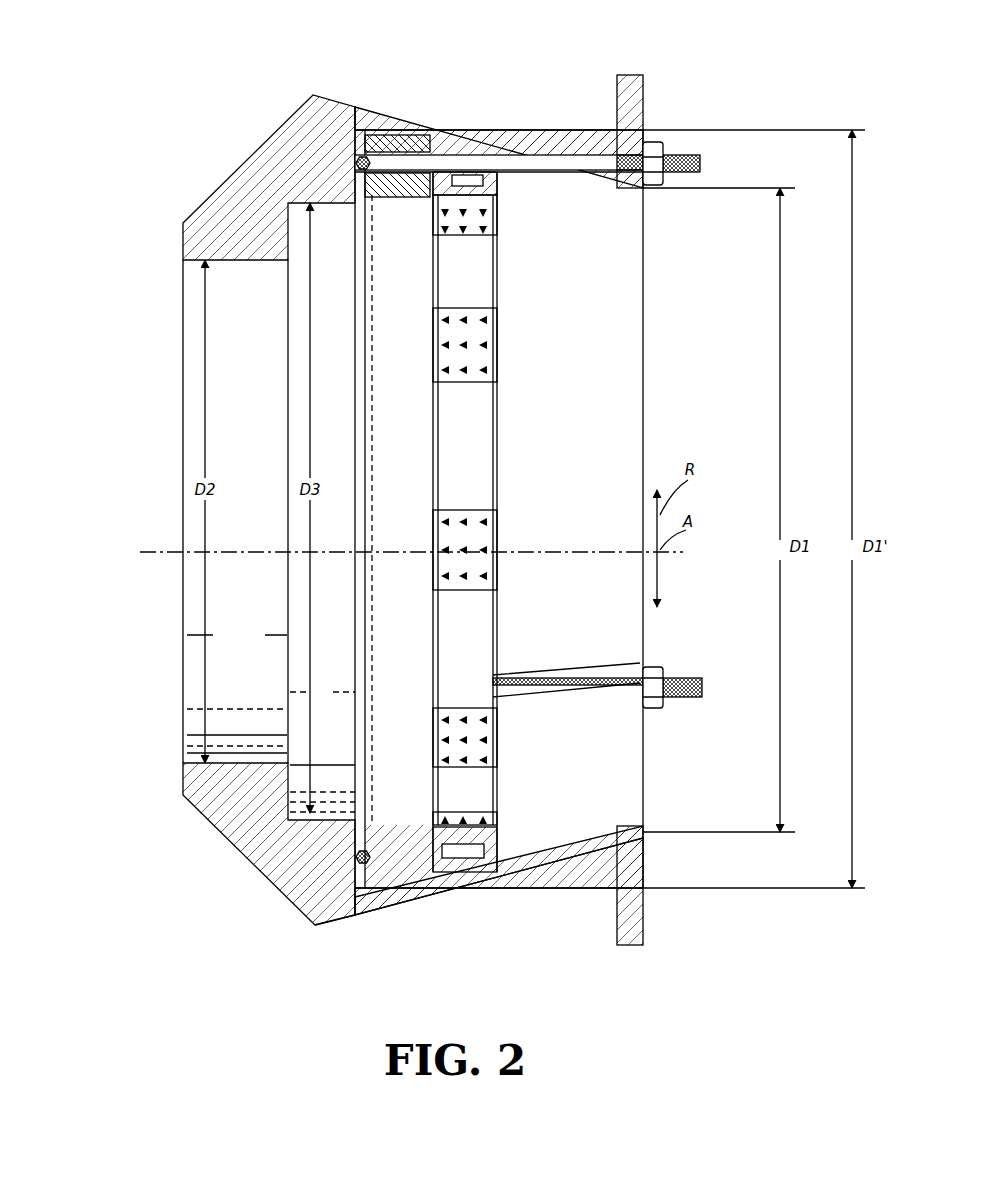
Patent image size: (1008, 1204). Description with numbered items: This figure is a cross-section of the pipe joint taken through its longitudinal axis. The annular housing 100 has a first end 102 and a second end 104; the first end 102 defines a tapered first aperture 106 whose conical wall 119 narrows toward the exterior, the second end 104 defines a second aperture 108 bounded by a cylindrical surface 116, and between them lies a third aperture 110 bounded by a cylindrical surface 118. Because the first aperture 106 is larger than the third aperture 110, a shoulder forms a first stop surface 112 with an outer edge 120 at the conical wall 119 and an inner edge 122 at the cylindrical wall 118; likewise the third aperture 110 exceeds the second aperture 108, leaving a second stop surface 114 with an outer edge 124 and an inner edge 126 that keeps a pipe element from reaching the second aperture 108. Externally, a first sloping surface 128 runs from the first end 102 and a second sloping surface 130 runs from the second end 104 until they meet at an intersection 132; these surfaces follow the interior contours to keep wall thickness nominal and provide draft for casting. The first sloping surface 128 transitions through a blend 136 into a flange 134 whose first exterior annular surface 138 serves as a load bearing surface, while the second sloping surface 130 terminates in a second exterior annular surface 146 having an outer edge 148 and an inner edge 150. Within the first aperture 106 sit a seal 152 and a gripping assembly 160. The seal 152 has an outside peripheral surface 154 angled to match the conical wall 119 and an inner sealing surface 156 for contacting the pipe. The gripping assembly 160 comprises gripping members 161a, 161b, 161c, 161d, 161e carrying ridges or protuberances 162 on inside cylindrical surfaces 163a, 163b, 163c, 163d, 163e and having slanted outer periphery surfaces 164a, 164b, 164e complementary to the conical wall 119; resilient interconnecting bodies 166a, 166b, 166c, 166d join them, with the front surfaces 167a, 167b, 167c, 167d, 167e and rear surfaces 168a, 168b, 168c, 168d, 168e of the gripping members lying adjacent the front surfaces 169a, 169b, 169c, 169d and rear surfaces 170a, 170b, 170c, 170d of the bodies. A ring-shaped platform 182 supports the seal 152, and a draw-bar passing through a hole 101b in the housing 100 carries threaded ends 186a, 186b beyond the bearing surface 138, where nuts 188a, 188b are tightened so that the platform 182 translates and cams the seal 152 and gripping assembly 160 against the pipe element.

The housing 100 is at (313, 92).
The hole 101b is at (622, 670).
The first end 102 is at (650, 208).
The second end 104 is at (172, 262).
The first aperture 106 is at (645, 292).
The second aperture 108 is at (200, 400).
The third aperture 110 is at (290, 200).
The first stop surface 112 is at (400, 150).
The second stop surface 114 is at (215, 258).
The cylindrical surface of second aperture 116 is at (183, 222).
The cylindrical surface of third aperture 118 is at (322, 198).
The conical wall 119 is at (612, 178).
The outer edge of first stop surface 120 is at (370, 135).
The inner edge of first stop surface 122 is at (333, 205).
The outer edge of second stop surface 124 is at (250, 157).
The inner edge of second stop surface 126 is at (292, 263).
The first sloping surface 128 is at (505, 135).
The second sloping surface 130 is at (200, 202).
The intersection 132 is at (315, 98).
The flange 134 is at (652, 923).
The blend 136 is at (615, 150).
The first exterior annular surface 138 is at (645, 93).
The second exterior annular surface 146 is at (180, 260).
The outer edge of second exterior annular surface 148 is at (182, 242).
The inner edge of second exterior annular surface 150 is at (182, 265).
The seal 152 is at (440, 880).
The outside peripheral surface 154 is at (412, 140).
The inner sealing surface 156 is at (412, 446).
The gripping assembly 160 is at (498, 302).
The gripping member 161a is at (497, 213).
The gripping member 161b is at (490, 357).
The gripping member 161c is at (477, 517).
The gripping member 161d is at (497, 728).
The gripping member 161e is at (510, 833).
The ridges or protuberances 162 is at (472, 258).
The inside cylindrical surface 163a is at (497, 231).
The inside cylindrical surface 163b is at (497, 337).
The inside cylindrical surface 163c is at (497, 563).
The inside cylindrical surface 163d is at (477, 705).
The inside cylindrical surface 163e is at (497, 820).
The slanted outer periphery surface 164a is at (460, 175).
The slanted outer periphery surface 164b is at (662, 667).
The slanted outer periphery surface 164e is at (485, 860).
The interconnecting body 166a is at (490, 272).
The interconnecting body 166b is at (462, 467).
The interconnecting body 166c is at (500, 627).
The interconnecting body 166d is at (495, 770).
The front surface of gripping member 167a is at (542, 172).
The front surface of gripping member 167b is at (497, 355).
The front surface of gripping member 167c is at (495, 533).
The front surface of gripping member 167d is at (497, 745).
The front surface of gripping member 167e is at (560, 835).
The rear surface of gripping member 168a is at (450, 178).
The rear surface of gripping member 168b is at (430, 340).
The rear surface of gripping member 168c is at (432, 583).
The rear surface of gripping member 168d is at (432, 733).
The rear surface of gripping member 168e is at (472, 863).
The front surface of interconnecting body 169a is at (497, 241).
The front surface of interconnecting body 169b is at (493, 500).
The front surface of interconnecting body 169c is at (493, 663).
The front surface of interconnecting body 169d is at (493, 793).
The rear surface of interconnecting body 170a is at (432, 282).
The rear surface of interconnecting body 170b is at (432, 487).
The rear surface of interconnecting body 170c is at (432, 630).
The rear surface of interconnecting body 170d is at (432, 773).
The platform 182 is at (372, 195).
The threaded end 186a is at (692, 156).
The threaded end 186b is at (703, 685).
The nut 188a is at (662, 140).
The nut 188b is at (652, 707).